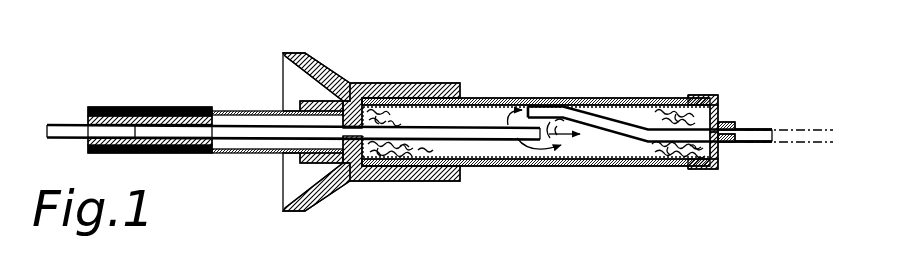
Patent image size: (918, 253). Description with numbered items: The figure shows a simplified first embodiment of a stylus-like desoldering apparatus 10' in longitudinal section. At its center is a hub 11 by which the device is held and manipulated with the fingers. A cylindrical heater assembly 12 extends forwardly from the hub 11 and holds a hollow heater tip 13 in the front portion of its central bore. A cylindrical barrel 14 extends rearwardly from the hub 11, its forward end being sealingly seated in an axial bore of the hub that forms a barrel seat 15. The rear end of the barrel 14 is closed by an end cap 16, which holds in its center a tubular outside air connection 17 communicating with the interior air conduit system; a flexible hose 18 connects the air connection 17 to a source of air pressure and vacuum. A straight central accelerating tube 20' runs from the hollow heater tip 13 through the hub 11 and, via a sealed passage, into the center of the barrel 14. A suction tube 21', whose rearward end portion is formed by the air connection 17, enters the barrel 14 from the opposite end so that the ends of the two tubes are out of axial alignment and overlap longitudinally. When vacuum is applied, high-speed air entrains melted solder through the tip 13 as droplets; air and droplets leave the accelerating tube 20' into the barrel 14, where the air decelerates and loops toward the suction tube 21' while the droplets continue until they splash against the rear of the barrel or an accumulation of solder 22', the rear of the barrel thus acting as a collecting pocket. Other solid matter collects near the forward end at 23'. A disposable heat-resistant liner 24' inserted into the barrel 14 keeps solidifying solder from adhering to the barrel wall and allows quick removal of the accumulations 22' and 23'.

The apparatus 10' is at (284, 108).
The central hub 11 is at (406, 82).
The cylindrical heater assembly 12 is at (153, 105).
The hollow heater tip 13 is at (75, 122).
The cylindrical barrel 14 is at (622, 100).
The barrel seat 15 is at (447, 102).
The end cap 16 is at (737, 80).
The tubular outside air connection 17 is at (743, 115).
The flexible hose 18 is at (795, 150).
The accelerating tube 20' is at (636, 82).
The suction tube 21' is at (565, 164).
The accumulation of solder 22' is at (670, 176).
The accumulation of other solid matter 23' is at (400, 173).
The disposable heat-resistant liner 24' is at (536, 178).